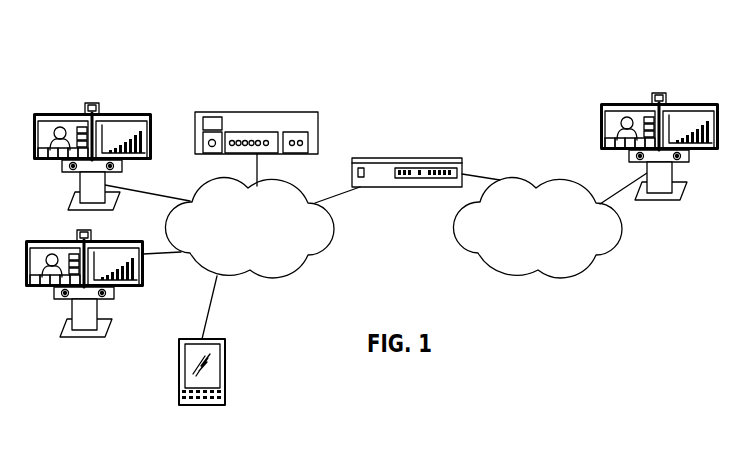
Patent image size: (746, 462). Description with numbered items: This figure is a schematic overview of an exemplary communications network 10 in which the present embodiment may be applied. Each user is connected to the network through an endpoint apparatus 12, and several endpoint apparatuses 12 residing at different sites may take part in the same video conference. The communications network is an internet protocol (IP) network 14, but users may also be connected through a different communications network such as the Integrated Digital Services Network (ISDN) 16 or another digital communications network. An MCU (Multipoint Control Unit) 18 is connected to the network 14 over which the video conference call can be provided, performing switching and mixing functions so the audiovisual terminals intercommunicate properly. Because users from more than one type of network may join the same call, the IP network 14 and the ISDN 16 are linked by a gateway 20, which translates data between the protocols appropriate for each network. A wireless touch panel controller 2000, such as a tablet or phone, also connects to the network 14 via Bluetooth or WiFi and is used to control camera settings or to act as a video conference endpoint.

The communications network 10 is at (511, 59).
The endpoint apparatus 12 is at (55, 112).
The internet protocol (IP) network 14 is at (288, 268).
The Integrated Digital Services Network (ISDN) 16 is at (578, 268).
The MCU (Multipoint Control Unit) 18 is at (260, 112).
The gateway 20 is at (423, 158).
The wireless touch panel controller 2000 is at (222, 407).